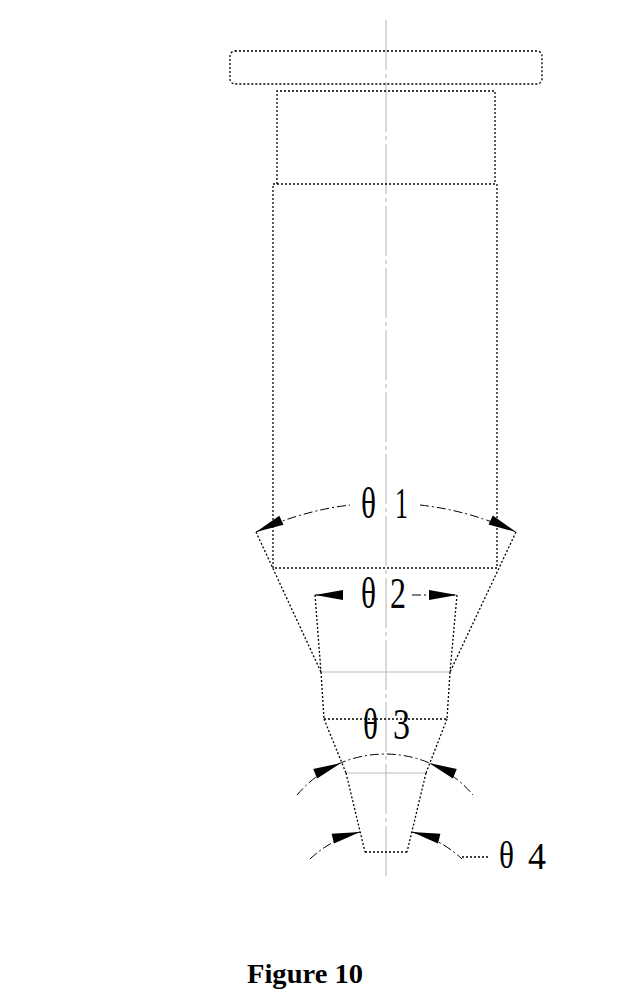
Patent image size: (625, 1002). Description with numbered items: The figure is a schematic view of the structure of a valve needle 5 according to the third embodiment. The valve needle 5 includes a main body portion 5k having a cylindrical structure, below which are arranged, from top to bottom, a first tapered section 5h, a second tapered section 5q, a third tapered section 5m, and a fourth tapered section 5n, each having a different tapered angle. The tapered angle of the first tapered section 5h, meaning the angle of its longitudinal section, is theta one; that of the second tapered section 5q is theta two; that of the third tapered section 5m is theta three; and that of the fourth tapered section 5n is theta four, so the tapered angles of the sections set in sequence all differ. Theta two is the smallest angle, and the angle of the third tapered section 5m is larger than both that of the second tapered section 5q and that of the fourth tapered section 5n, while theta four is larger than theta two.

The valve needle 5 is at (217, 202).
The main body portion 5k is at (313, 380).
The first tapered section 5h is at (368, 613).
The second tapered section 5q is at (332, 697).
The third tapered section 5m is at (353, 765).
The fourth tapered section 5n is at (370, 845).